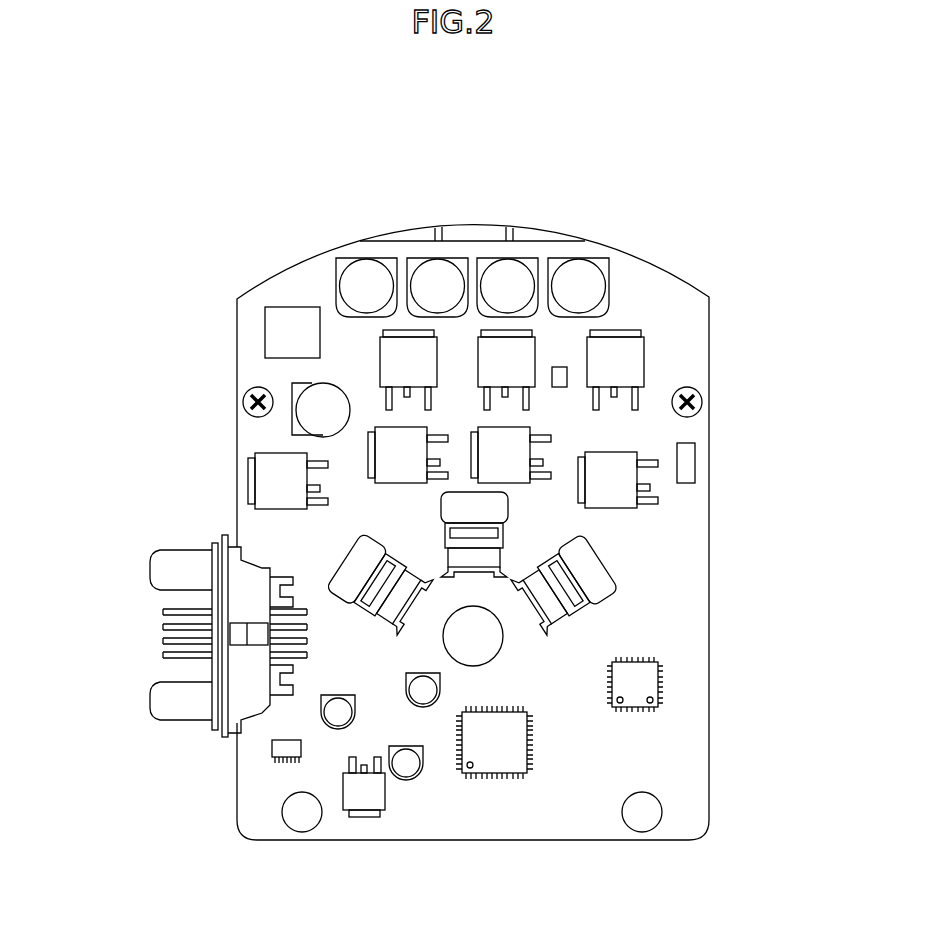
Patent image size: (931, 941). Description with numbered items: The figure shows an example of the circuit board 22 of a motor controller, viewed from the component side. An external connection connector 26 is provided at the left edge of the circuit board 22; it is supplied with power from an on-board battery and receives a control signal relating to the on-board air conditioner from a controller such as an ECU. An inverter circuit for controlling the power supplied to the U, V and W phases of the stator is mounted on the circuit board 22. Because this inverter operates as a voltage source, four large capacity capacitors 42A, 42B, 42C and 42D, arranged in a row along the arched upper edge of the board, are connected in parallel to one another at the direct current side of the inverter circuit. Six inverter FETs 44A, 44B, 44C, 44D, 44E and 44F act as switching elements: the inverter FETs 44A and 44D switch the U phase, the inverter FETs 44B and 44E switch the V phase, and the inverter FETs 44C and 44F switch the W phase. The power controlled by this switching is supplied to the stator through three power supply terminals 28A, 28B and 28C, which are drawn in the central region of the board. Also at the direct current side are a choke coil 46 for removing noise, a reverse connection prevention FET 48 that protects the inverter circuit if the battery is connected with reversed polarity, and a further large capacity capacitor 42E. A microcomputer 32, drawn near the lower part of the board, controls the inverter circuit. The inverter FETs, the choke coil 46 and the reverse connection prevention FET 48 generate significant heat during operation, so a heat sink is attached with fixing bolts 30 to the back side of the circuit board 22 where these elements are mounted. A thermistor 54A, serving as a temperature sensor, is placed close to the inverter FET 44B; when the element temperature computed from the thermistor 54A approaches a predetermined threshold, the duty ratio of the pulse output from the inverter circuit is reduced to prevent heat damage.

The circuit board 22 is at (275, 845).
The external connection connector 26 is at (147, 735).
The power supply terminal 28A is at (378, 608).
The power supply terminal 28B is at (478, 574).
The power supply terminal 28C is at (597, 590).
The fixing bolt 30 is at (248, 392).
The microcomputer 32 is at (505, 765).
The large capacity capacitor 42A is at (361, 270).
The large capacity capacitor 42B is at (430, 268).
The large capacity capacitor 42C is at (502, 270).
The large capacity capacitor 42D is at (570, 268).
The large capacity capacitor 42E is at (292, 387).
The inverter FET 44A is at (385, 355).
The inverter FET 44B is at (525, 353).
The inverter FET 44C is at (632, 355).
The inverter FET 44D is at (385, 468).
The inverter FET 44E is at (528, 478).
The inverter FET 44F is at (627, 500).
The choke coil 46 is at (273, 307).
The reverse connection prevention FET 48 is at (268, 487).
The thermistor 54A is at (557, 367).